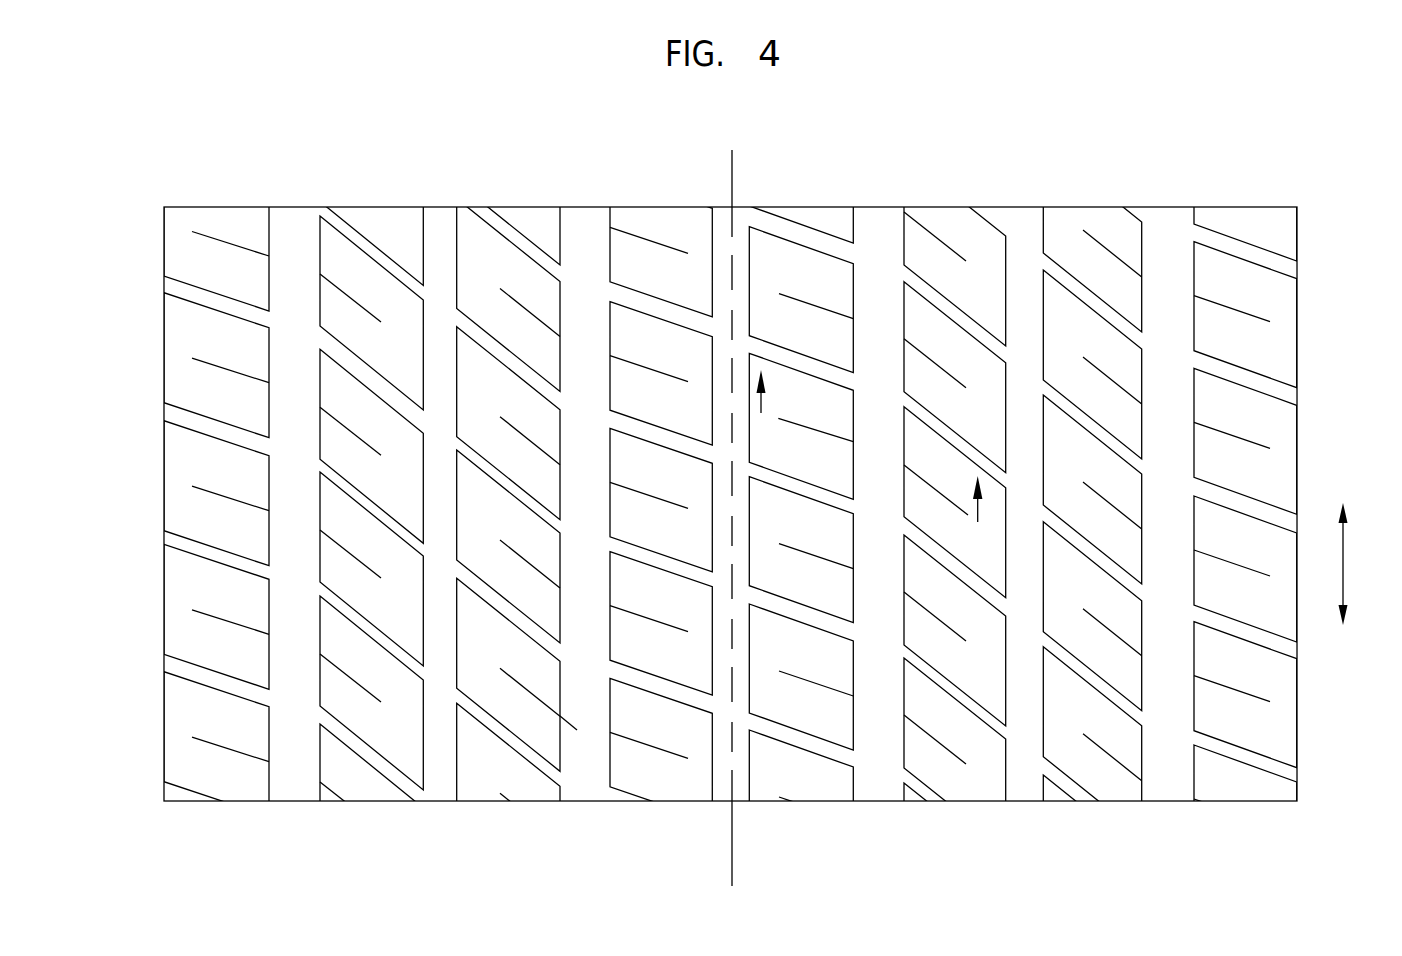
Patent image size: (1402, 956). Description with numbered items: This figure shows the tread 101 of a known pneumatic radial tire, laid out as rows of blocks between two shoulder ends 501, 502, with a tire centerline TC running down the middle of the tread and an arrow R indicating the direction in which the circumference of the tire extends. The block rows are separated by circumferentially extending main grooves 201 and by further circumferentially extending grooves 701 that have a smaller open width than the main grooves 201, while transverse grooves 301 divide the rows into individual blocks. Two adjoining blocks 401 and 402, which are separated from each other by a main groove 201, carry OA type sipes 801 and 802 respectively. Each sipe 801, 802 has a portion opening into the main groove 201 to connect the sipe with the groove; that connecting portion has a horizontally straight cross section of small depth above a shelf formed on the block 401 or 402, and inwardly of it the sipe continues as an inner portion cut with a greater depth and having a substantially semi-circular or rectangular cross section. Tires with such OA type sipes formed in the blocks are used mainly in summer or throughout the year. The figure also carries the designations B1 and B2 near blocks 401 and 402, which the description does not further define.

The tread 101 is at (1266, 180).
The main groove 201 is at (290, 228).
The transverse grooves 301 is at (805, 237).
The block 401 is at (826, 447).
The block 402 is at (993, 567).
The shoulder end 501 is at (163, 482).
The shoulder end 502 is at (1299, 493).
The circumferentially extending grooves 701 is at (440, 228).
The sipe 801 is at (803, 401).
The sipe 802 is at (937, 488).
The tire centerline TC is at (732, 824).
The first block direction B1 is at (765, 408).
The second block direction B2 is at (982, 519).
The arrow R is at (1352, 561).